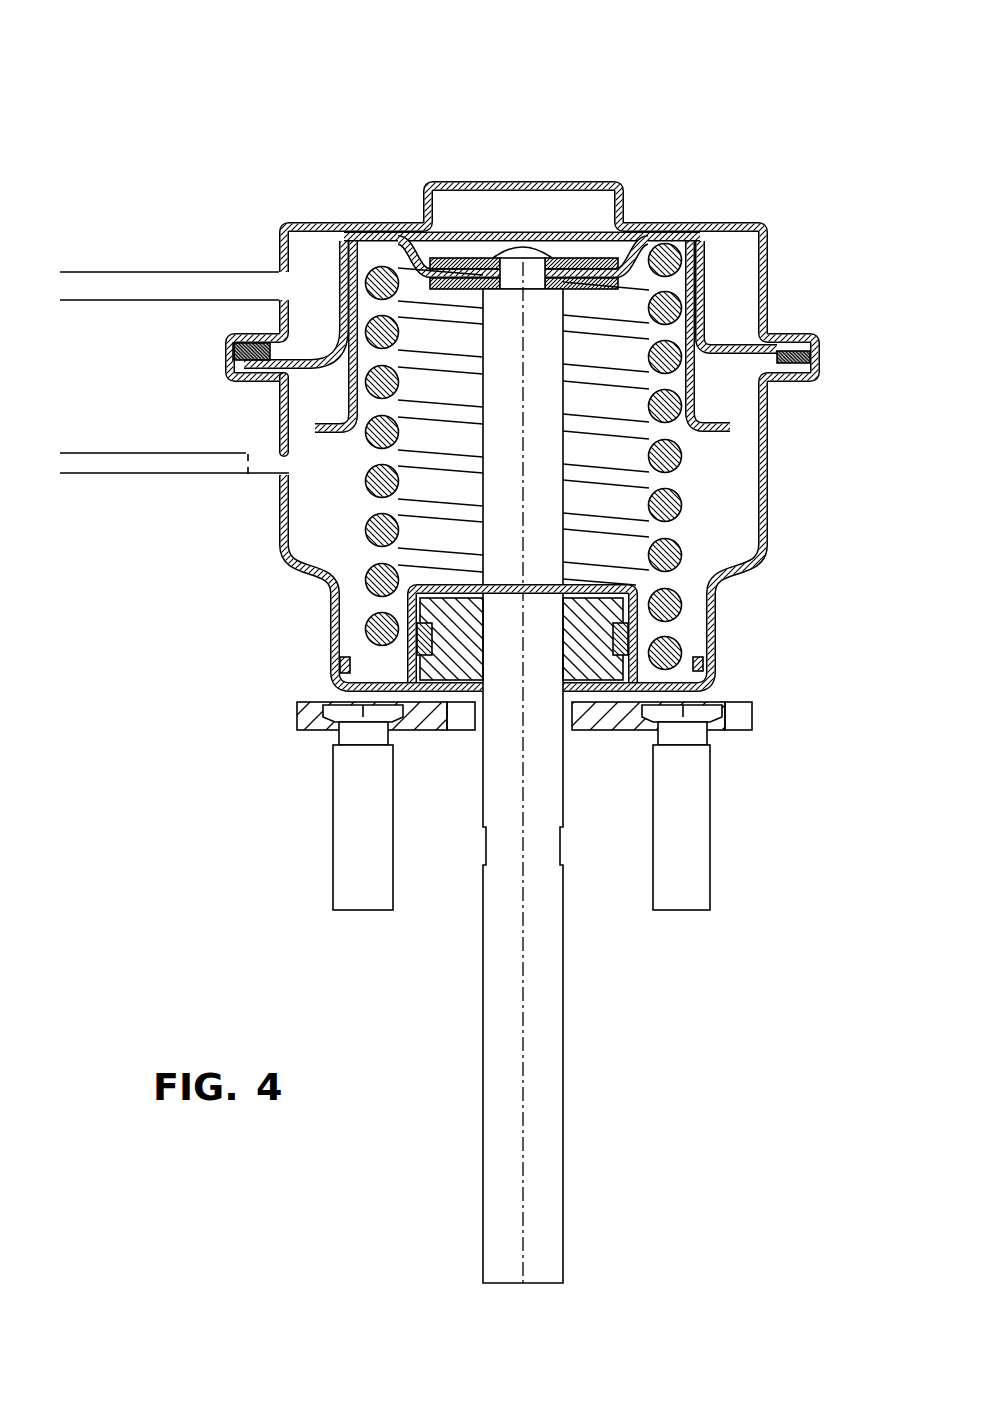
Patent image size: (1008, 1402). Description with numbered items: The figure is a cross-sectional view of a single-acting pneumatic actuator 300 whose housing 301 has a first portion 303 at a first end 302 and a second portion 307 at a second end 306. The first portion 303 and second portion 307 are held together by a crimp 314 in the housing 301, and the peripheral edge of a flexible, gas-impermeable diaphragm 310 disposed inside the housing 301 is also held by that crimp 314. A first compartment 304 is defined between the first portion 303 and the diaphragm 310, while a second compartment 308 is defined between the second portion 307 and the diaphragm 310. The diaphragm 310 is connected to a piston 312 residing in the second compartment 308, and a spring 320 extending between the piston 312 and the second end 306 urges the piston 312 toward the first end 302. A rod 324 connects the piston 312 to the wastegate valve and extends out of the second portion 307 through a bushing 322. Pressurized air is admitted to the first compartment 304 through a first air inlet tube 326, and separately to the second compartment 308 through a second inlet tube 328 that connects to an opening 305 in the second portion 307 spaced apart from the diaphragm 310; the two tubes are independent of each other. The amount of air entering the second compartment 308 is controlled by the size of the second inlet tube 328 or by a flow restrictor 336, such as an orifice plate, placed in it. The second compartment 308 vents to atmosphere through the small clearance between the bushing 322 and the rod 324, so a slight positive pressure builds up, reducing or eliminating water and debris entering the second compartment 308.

The single-acting pneumatic actuator 300 is at (717, 114).
The housing 301 is at (832, 237).
The first end 302 is at (710, 220).
The first portion 303 is at (767, 293).
The first compartment 304 is at (733, 258).
The opening 305 is at (273, 455).
The second end 306 is at (695, 703).
The second portion 307 is at (770, 400).
The second compartment 308 is at (728, 543).
The diaphragm 310 is at (467, 230).
The piston 312 is at (582, 256).
The crimp 314 is at (233, 354).
The spring 320 is at (670, 503).
The bushing 322 is at (588, 660).
The rod 324 is at (548, 997).
The first air inlet tube 326 is at (120, 271).
The second inlet tube 328 is at (130, 475).
The flow restrictor 336 is at (240, 470).